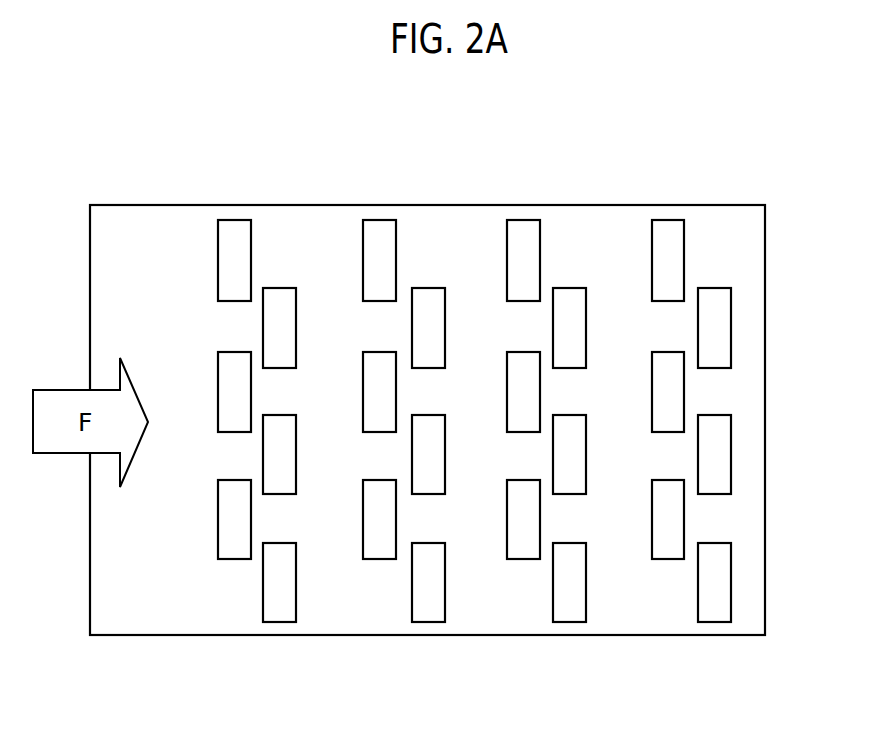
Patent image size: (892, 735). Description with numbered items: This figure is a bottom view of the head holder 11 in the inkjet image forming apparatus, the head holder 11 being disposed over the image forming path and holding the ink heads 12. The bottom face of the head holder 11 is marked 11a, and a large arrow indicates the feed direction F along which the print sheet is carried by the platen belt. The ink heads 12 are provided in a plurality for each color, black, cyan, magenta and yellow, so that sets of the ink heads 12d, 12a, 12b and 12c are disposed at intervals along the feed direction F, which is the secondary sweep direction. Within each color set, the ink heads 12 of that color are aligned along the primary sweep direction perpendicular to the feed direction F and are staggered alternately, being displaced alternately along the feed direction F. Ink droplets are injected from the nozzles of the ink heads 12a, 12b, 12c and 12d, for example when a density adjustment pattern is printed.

The head holder 11 is at (147, 205).
The mounting surface of head unit 11a is at (167, 318).
The ink heads 12 is at (208, 215).
The ink head 12a is at (392, 233).
The ink head 12b is at (536, 233).
The ink head 12c is at (680, 233).
The ink head 12d is at (246, 232).